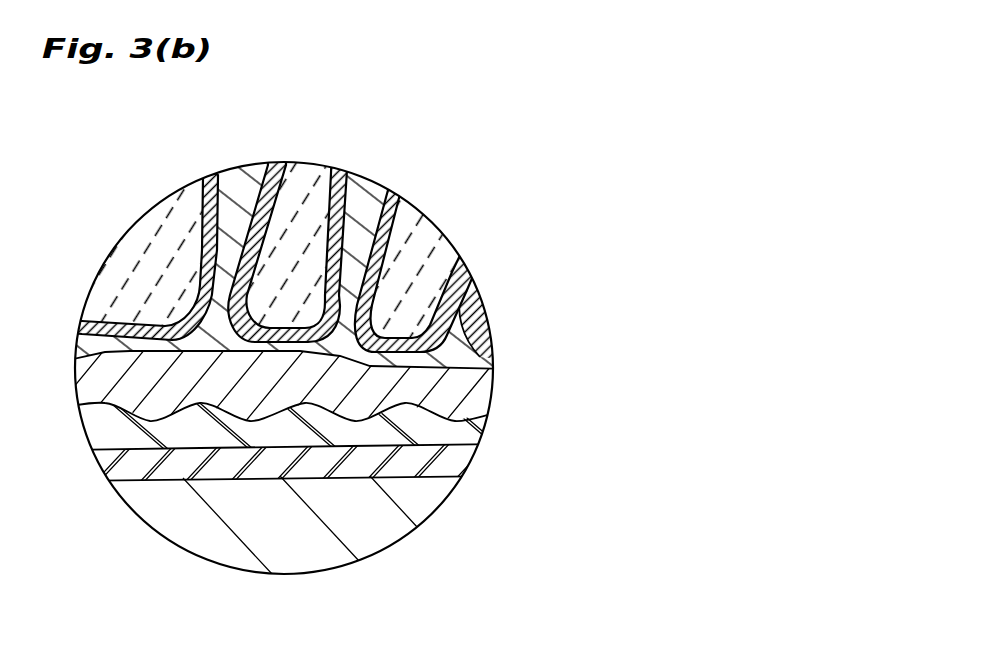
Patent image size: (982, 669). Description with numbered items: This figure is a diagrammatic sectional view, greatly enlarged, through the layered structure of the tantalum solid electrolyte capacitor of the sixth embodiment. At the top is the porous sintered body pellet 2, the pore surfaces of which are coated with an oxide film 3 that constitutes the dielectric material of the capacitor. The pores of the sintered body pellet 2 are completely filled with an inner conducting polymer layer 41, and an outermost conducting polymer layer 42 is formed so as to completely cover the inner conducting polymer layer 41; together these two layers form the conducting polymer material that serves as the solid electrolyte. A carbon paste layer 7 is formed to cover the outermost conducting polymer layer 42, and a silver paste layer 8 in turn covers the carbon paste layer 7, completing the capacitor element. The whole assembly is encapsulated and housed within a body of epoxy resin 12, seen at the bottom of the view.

The sintered body pellet 2 is at (434, 267).
The oxide film 3 is at (400, 200).
The inner conducting polymer layer 41 is at (470, 306).
The outermost conducting polymer layer 42 is at (483, 390).
The carbon paste layer 7 is at (477, 427).
The silver paste layer 8 is at (114, 467).
The epoxy resin 12 is at (360, 510).